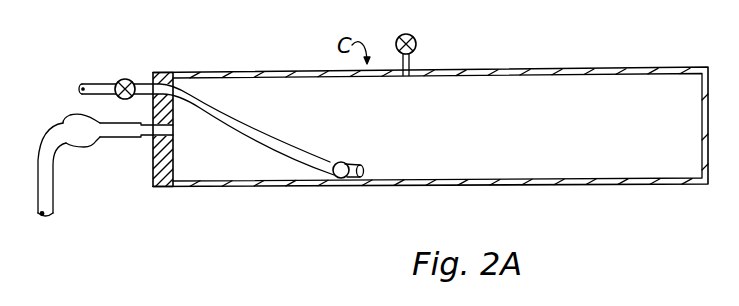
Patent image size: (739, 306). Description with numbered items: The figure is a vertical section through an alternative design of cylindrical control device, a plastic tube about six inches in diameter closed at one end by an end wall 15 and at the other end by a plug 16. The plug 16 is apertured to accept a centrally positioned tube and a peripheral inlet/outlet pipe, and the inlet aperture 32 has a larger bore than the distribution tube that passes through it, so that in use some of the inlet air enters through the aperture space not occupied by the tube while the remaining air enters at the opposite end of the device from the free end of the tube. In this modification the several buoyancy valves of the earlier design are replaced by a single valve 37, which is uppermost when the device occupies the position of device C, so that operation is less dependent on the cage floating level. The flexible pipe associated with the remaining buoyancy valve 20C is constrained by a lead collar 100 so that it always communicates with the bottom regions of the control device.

The end wall 15 is at (703, 110).
The plug 16 is at (151, 75).
The buoyancy valve 20C is at (119, 81).
The inlet aperture 32 is at (185, 122).
The valve 37 is at (417, 43).
The collar 100 is at (346, 158).